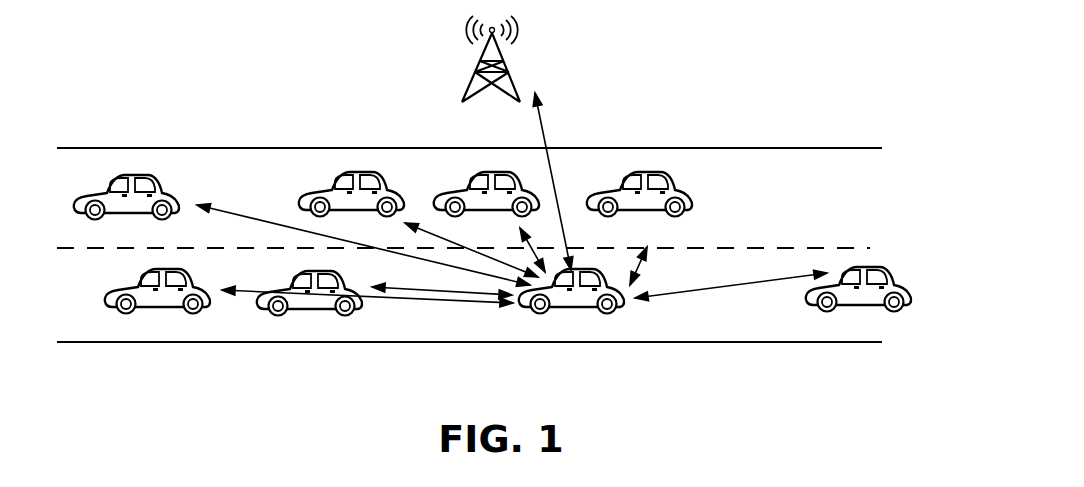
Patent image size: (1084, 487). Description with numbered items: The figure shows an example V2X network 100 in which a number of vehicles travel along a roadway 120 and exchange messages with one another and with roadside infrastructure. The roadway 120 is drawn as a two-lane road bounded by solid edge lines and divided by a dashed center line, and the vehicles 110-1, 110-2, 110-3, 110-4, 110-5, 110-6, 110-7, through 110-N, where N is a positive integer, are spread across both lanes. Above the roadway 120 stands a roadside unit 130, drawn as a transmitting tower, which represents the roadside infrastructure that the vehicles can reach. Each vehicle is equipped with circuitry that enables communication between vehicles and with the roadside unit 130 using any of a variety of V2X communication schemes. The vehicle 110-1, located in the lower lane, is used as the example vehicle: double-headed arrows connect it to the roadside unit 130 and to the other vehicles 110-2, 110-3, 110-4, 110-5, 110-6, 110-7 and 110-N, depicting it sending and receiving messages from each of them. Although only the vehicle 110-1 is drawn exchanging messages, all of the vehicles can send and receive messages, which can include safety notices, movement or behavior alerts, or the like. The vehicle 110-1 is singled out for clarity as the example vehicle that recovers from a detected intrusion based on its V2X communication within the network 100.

The V2X network 100 is at (165, 75).
The vehicle 110-1 is at (545, 331).
The vehicle 110-2 is at (102, 237).
The vehicle 110-3 is at (327, 234).
The vehicle 110-4 is at (462, 234).
The vehicle 110-5 is at (616, 234).
The vehicle 110-6 is at (139, 332).
The vehicle 110-7 is at (286, 333).
The vehicle 110-N is at (835, 331).
The roadway 120 is at (785, 138).
The roadside unit (RSU) 130 is at (520, 80).